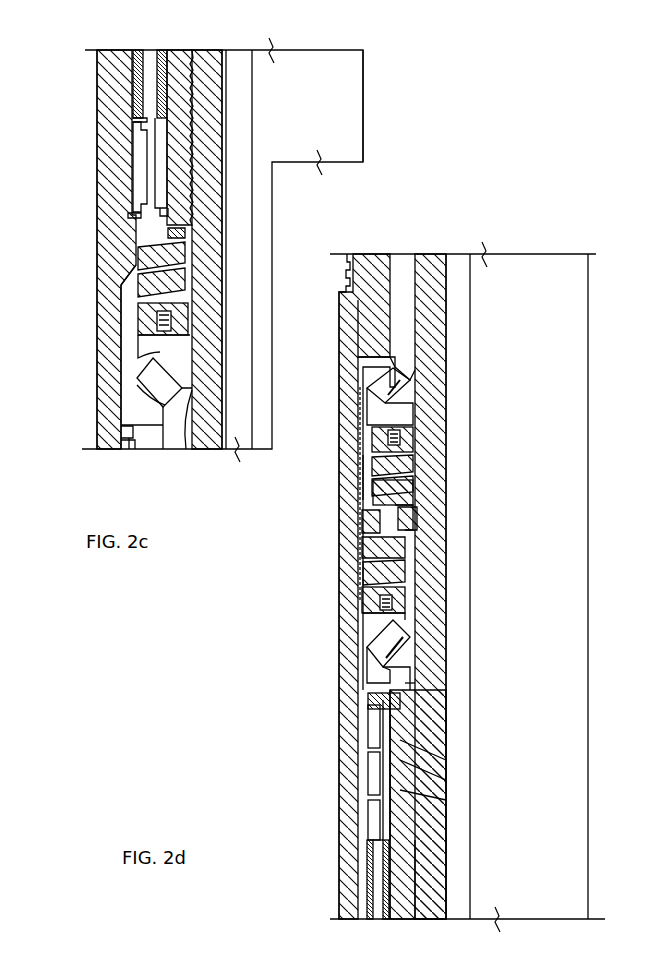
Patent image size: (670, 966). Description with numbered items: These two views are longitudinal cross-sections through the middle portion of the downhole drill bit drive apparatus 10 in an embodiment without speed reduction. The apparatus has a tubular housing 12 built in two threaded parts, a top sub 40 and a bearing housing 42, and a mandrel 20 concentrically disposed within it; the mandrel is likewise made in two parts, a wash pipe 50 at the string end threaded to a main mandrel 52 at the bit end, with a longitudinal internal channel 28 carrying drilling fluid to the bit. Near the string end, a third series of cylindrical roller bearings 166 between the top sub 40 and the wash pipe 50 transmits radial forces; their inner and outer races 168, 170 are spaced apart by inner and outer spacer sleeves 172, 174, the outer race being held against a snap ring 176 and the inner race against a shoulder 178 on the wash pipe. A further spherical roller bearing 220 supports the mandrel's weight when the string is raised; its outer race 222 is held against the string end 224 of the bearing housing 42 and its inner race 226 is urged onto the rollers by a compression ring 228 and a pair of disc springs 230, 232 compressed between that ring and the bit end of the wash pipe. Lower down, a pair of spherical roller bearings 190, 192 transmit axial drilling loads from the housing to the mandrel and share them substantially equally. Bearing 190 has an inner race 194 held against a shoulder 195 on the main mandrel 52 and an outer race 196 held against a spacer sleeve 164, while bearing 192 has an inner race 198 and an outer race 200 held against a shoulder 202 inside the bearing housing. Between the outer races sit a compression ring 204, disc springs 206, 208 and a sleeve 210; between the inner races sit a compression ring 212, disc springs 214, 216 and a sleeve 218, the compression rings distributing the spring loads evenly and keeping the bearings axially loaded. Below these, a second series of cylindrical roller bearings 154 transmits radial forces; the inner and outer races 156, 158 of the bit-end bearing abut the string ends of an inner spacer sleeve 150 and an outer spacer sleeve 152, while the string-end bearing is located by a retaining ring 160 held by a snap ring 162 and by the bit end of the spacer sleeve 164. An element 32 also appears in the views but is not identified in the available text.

In FIG. 2C, the downhole drill bit drive apparatus 10 is at (366, 60).
In FIG. 2C, the tubular housing 12 is at (108, 172).
In FIG. 2D, the tubular housing 12 is at (340, 434).
In FIG. 2C, the mandrel 20 is at (212, 420).
In FIG. 2D, the mandrel 20 is at (442, 598).
In FIG. 2C, the longitudinal internal channel 28 is at (226, 265).
In FIG. 2D, the longitudinal internal channel 28 is at (448, 575).
In FIG. 2C, the seal ring 32 is at (128, 432).
In FIG. 2D, the seal ring 32 is at (360, 320).
In FIG. 2C, the top sub 40 is at (100, 250).
In FIG. 2D, the top sub 40 is at (347, 262).
In FIG. 2C, the bearing housing 42 is at (134, 450).
In FIG. 2D, the bearing housing 42 is at (355, 378).
In FIG. 2C, the wash pipe 50 is at (180, 186).
In FIG. 2C, the main mandrel 52 is at (210, 228).
In FIG. 2D, the main mandrel 52 is at (440, 700).
In FIG. 2D, the inner spacer sleeve 150 is at (440, 850).
In FIG. 2D, the outer spacer sleeve 152 is at (365, 905).
In FIG. 2D, the cylindrical roller bearings 154 is at (370, 805).
In FIG. 2D, the inner race 156 is at (440, 785).
In FIG. 2D, the outer race 158 is at (368, 728).
In FIG. 2D, the retaining ring 160 is at (440, 718).
In FIG. 2D, the snap ring 162 is at (365, 695).
In FIG. 2D, the spacer sleeve 164 is at (362, 678).
In FIG. 2C, the cylindrical roller bearings 166 is at (146, 160).
In FIG. 2C, the inner race 168 is at (162, 175).
In FIG. 2C, the outer race 170 is at (131, 127).
In FIG. 2C, the inner spacer sleeve 172 is at (163, 95).
In FIG. 2C, the outer spacer sleeve 174 is at (139, 50).
In FIG. 2C, the snap ring 176 is at (128, 222).
In FIG. 2C, the shoulder 178 is at (160, 255).
In FIG. 2D, the spherical roller bearing 190 is at (365, 645).
In FIG. 2D, the spherical roller bearing 192 is at (410, 375).
In FIG. 2D, the inner race 194 is at (410, 658).
In FIG. 2D, the shoulder 195 is at (415, 680).
In FIG. 2D, the outer race 196 is at (372, 632).
In FIG. 2D, the inner race 198 is at (415, 415).
In FIG. 2D, the outer race 200 is at (372, 376).
In FIG. 2D, the shoulder 202 is at (358, 365).
In FIG. 2D, the compression ring 204 is at (358, 565).
In FIG. 2D, the disc spring 206 is at (360, 530).
In FIG. 2D, the disc spring 208 is at (360, 500).
In FIG. 2D, the sleeve 210 is at (362, 460).
In FIG. 2D, the compression ring 212 is at (415, 440).
In FIG. 2D, the disc spring 214 is at (415, 470).
In FIG. 2D, the disc spring 216 is at (415, 500).
In FIG. 2D, the sleeve 218 is at (415, 540).
In FIG. 2C, the spherical roller bearing 220 is at (178, 435).
In FIG. 2C, the outer race 222 is at (148, 374).
In FIG. 2C, the string end 224 is at (150, 410).
In FIG. 2C, the inner race 226 is at (152, 347).
In FIG. 2C, the compression ring 228 is at (185, 318).
In FIG. 2C, the disc spring 230 is at (188, 292).
In FIG. 2C, the disc spring 232 is at (188, 274).